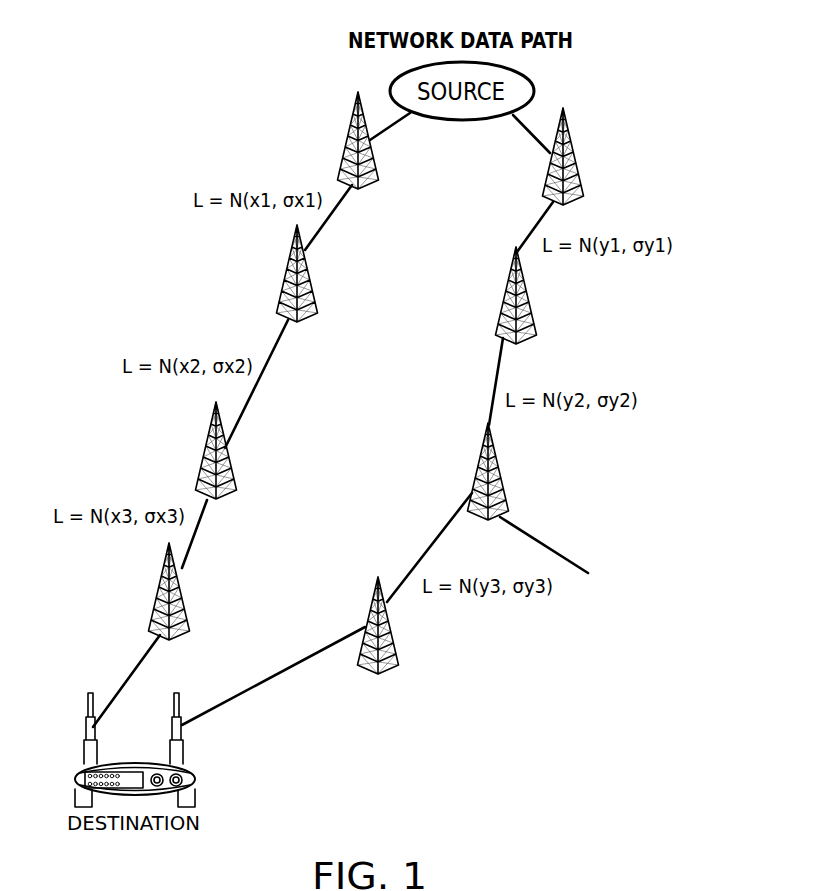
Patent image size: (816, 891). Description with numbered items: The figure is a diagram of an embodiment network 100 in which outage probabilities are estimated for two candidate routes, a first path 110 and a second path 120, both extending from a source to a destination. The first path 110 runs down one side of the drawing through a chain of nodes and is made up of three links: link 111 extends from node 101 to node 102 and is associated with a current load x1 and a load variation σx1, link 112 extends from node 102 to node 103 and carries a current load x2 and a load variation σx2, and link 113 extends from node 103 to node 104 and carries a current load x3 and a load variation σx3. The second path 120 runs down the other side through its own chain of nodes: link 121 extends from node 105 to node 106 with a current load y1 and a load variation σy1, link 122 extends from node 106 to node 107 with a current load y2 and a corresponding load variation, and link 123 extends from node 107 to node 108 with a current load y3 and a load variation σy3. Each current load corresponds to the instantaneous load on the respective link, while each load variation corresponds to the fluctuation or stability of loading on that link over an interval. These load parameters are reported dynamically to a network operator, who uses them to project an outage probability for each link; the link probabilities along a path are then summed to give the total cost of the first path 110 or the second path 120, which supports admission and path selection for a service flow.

The network 100 is at (128, 160).
The node 101 is at (348, 132).
The node 102 is at (292, 263).
The node 103 is at (208, 440).
The node 104 is at (158, 580).
The node 105 is at (575, 145).
The node 106 is at (597, 311).
The node 107 is at (502, 458).
The node 108 is at (390, 673).
The first path 110 is at (135, 667).
The link 111 is at (330, 220).
The link 112 is at (258, 383).
The link 113 is at (195, 538).
The second path 120 is at (275, 682).
The link 121 is at (533, 225).
The link 122 is at (495, 387).
The link 123 is at (428, 545).